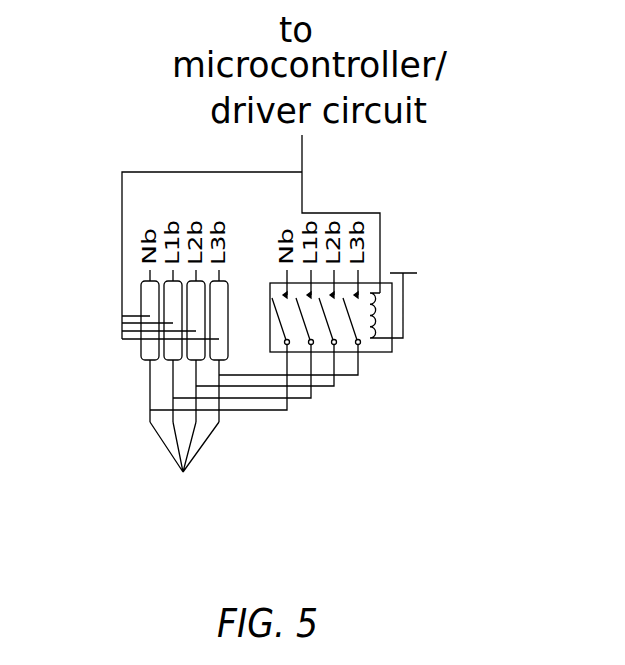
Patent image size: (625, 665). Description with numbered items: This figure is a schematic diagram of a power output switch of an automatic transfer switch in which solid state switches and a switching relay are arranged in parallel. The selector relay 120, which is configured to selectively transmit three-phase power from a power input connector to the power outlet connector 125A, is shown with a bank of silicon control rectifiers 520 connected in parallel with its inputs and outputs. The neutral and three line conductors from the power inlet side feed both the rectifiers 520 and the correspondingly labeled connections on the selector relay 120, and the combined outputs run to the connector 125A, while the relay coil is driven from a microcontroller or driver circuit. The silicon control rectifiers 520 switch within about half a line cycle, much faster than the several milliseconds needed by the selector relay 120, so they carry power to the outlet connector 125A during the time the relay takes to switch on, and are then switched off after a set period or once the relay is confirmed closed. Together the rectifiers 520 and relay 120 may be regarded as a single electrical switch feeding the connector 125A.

The silicon control rectifiers 520 is at (115, 283).
The selector relay 120 is at (422, 283).
The power output connector 125A is at (193, 497).